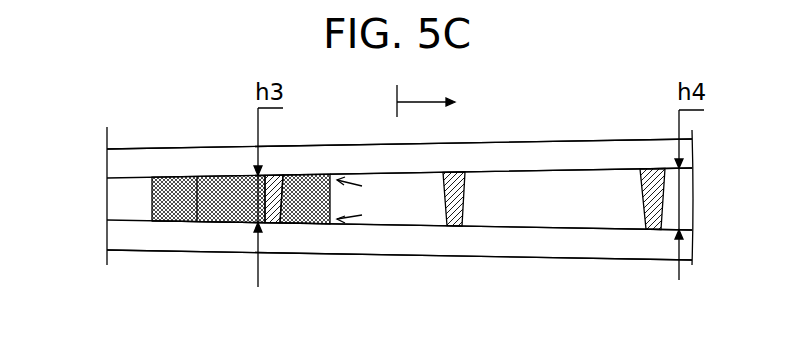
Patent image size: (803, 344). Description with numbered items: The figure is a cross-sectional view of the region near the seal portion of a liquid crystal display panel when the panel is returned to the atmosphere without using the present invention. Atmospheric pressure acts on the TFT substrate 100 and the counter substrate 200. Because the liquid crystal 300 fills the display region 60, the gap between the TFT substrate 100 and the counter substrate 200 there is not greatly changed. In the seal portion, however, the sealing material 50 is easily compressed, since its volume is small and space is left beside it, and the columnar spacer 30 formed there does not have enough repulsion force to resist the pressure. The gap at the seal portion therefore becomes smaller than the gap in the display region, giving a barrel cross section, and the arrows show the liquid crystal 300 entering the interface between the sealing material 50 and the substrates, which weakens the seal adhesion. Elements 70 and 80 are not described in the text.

The backlight unit 70 is at (125, 206).
The counter substrate 200 is at (169, 156).
The TFT substrate 100 is at (170, 240).
The bonding portion 80 is at (201, 198).
The sealing material 50 is at (225, 222).
The columnar spacer 30 is at (282, 190).
The liquid crystal 300 is at (511, 199).
The display region 60 is at (426, 94).